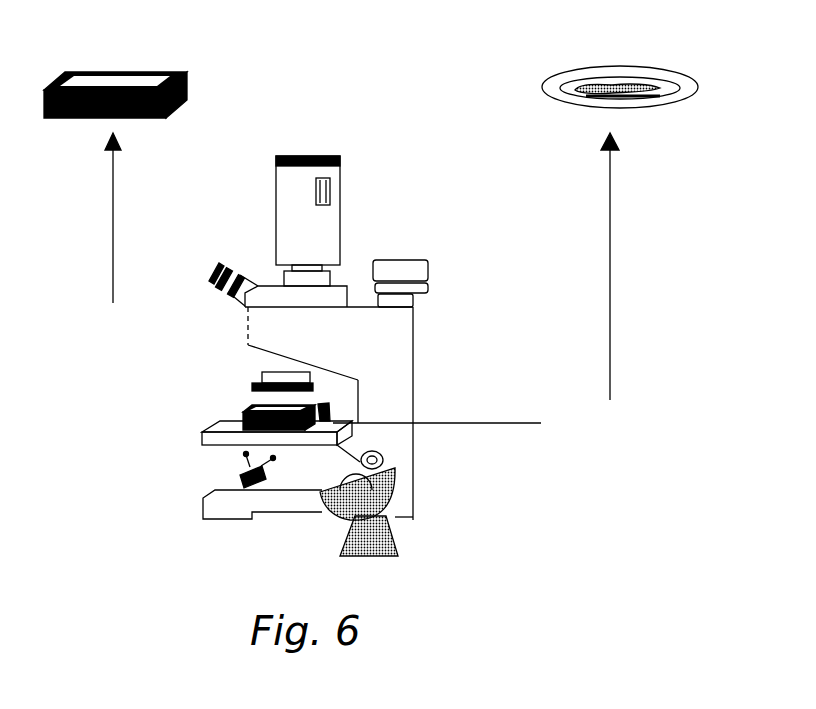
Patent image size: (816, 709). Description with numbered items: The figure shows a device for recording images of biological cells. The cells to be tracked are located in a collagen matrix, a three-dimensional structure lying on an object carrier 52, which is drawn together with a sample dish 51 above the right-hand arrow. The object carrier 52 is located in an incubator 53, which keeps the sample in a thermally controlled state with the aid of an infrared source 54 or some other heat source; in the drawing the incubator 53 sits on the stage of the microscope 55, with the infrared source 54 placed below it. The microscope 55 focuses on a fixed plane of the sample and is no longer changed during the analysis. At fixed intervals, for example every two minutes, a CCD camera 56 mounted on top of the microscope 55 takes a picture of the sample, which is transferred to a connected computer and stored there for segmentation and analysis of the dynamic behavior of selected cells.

The sample dish 51 is at (612, 80).
The object carrier 52 is at (605, 288).
The incubator 53 is at (228, 406).
The infrared source 54 is at (398, 554).
The microscope 55 is at (417, 351).
The CCD camera 56 is at (348, 203).